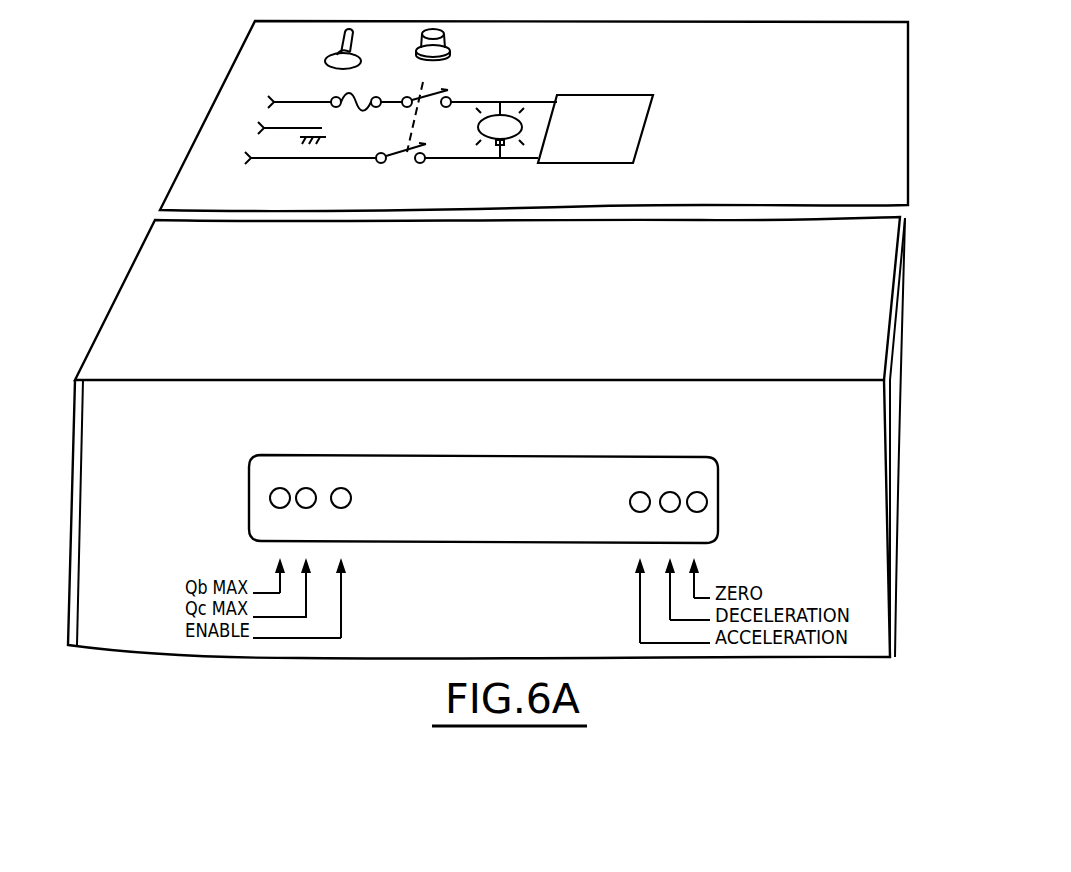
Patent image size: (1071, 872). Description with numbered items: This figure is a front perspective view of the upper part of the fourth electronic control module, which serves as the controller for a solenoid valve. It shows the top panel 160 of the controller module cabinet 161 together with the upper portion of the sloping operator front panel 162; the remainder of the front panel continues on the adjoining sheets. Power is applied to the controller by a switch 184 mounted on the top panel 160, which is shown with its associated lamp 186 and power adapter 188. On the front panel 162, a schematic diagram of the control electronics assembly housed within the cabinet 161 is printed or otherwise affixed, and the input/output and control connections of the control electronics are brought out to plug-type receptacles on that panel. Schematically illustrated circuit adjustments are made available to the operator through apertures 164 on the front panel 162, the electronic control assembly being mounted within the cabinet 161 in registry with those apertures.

The top panel 160 is at (200, 146).
The controller module cabinet 161 is at (72, 376).
The sloping operator front panel 162 is at (108, 638).
The apertures 164 is at (645, 492).
The switch 184 is at (360, 62).
The lamp 186 is at (452, 50).
The power adapter 188 is at (621, 109).